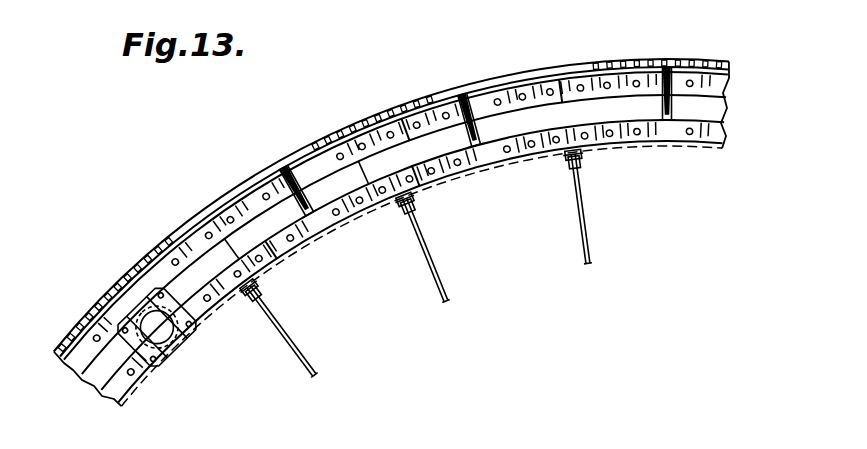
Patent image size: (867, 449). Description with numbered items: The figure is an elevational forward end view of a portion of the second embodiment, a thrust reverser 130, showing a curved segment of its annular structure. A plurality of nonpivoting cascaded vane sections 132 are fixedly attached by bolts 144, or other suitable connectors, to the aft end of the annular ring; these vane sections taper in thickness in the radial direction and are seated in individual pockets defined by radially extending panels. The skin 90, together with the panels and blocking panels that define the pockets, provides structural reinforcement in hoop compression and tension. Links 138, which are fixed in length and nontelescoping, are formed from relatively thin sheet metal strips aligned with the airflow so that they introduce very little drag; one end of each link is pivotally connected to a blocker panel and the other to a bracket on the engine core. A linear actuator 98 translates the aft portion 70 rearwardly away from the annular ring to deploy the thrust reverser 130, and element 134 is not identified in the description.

The thrust reverser 130 is at (122, 243).
The aft portion 70 is at (655, 63).
The skin 90 is at (305, 148).
The cascaded vane section 132 is at (250, 195).
The radial spacer struts 134 is at (300, 245).
The link 138 is at (295, 345).
The bolt 144 is at (210, 237).
The linear actuator 98 is at (188, 350).